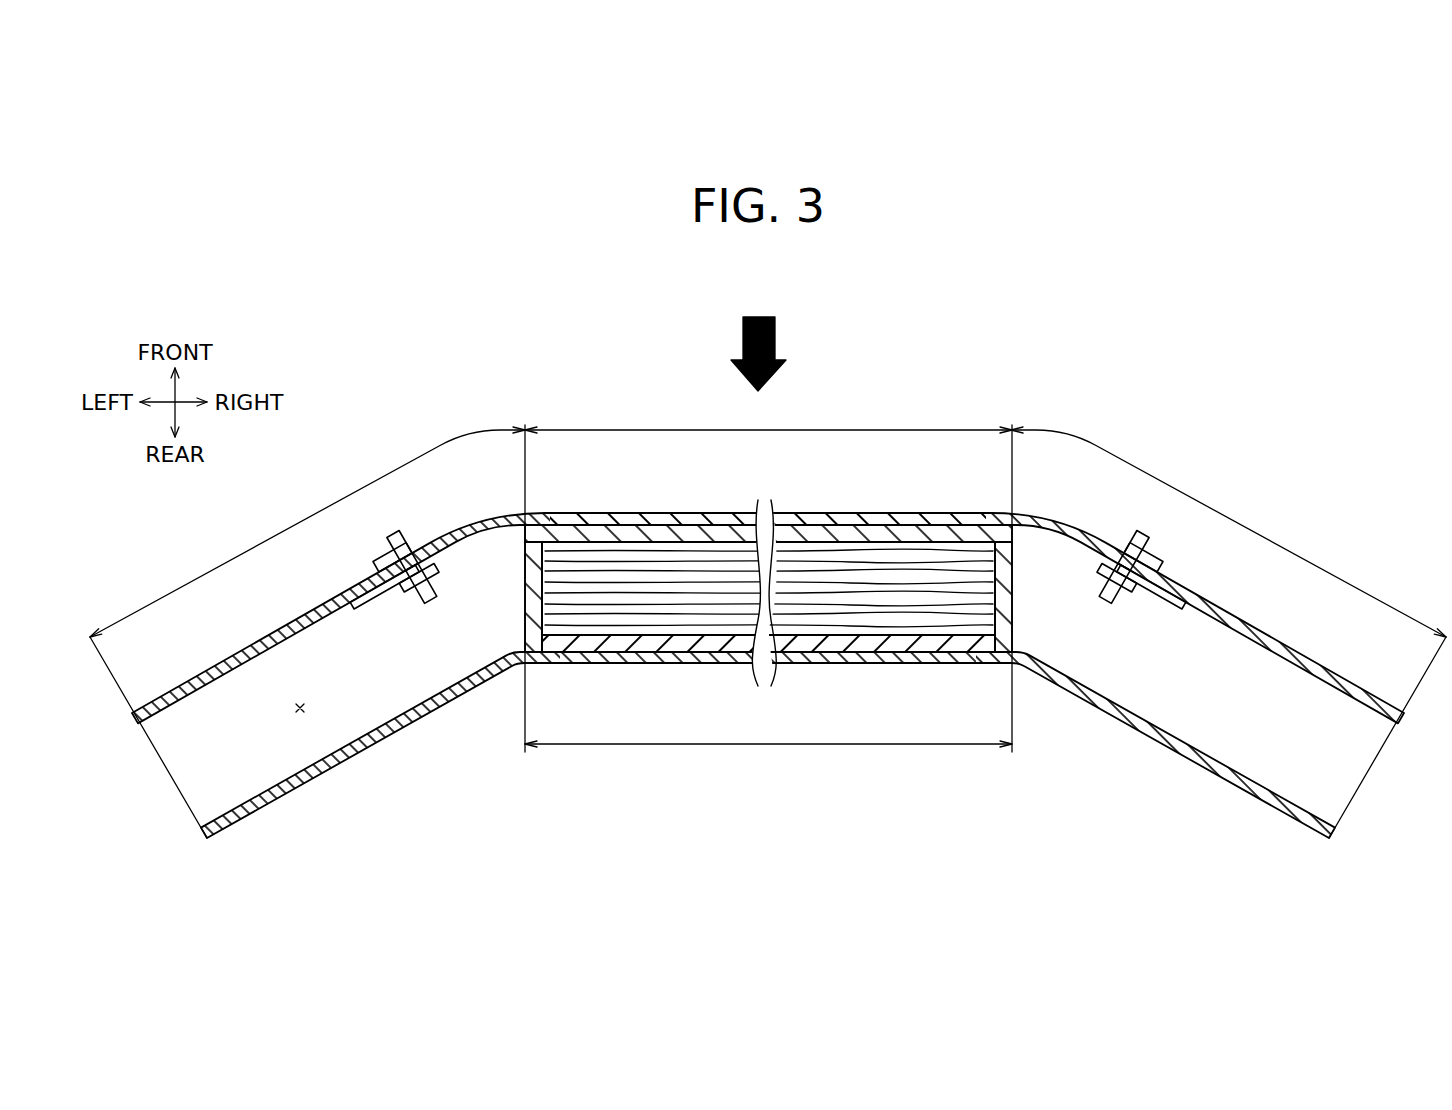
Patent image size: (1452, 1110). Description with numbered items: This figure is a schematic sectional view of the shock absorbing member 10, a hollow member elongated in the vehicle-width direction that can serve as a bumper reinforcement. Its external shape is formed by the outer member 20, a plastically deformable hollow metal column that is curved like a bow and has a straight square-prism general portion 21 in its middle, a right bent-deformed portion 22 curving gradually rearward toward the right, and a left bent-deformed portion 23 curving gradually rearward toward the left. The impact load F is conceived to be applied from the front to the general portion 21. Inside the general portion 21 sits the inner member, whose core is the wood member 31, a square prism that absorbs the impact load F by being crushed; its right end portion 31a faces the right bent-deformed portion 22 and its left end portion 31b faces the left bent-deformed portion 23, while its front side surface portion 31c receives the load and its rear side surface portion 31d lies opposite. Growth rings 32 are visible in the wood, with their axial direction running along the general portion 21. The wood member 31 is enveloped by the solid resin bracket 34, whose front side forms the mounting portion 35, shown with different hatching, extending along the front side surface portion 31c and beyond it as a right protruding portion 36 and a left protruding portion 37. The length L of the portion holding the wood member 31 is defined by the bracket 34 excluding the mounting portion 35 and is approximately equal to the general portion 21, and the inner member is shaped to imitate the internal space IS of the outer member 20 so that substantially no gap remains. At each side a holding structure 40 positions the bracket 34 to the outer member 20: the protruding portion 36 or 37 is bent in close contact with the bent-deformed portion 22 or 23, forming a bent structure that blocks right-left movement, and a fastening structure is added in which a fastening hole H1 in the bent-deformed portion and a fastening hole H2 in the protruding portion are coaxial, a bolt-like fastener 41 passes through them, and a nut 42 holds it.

The shock absorbing member 10 is at (768, 591).
The outer member 20 is at (768, 646).
The general portion 21 is at (768, 577).
The right bent-deformed portion 22 is at (1238, 522).
The left bent-deformed portion 23 is at (296, 526).
The wood member 31 is at (769, 635).
The right end portion 31a is at (1000, 598).
The left end portion 31b is at (528, 580).
The front side surface portion 31c is at (553, 654).
The rear side surface portion 31d is at (601, 640).
The growth rings 32 is at (950, 625).
The bracket 34 is at (593, 523).
The mounting portion 35 is at (888, 520).
The right protruding portion 36 is at (1185, 601).
The left protruding portion 37 is at (349, 604).
The holding structure 40 is at (768, 626).
The fastener 41 is at (385, 552).
The nut 42 is at (404, 592).
The impact load F is at (778, 324).
The fastening hole H1 is at (412, 538).
The fastening hole H2 is at (432, 601).
The internal space IS is at (303, 711).
The length L is at (768, 759).